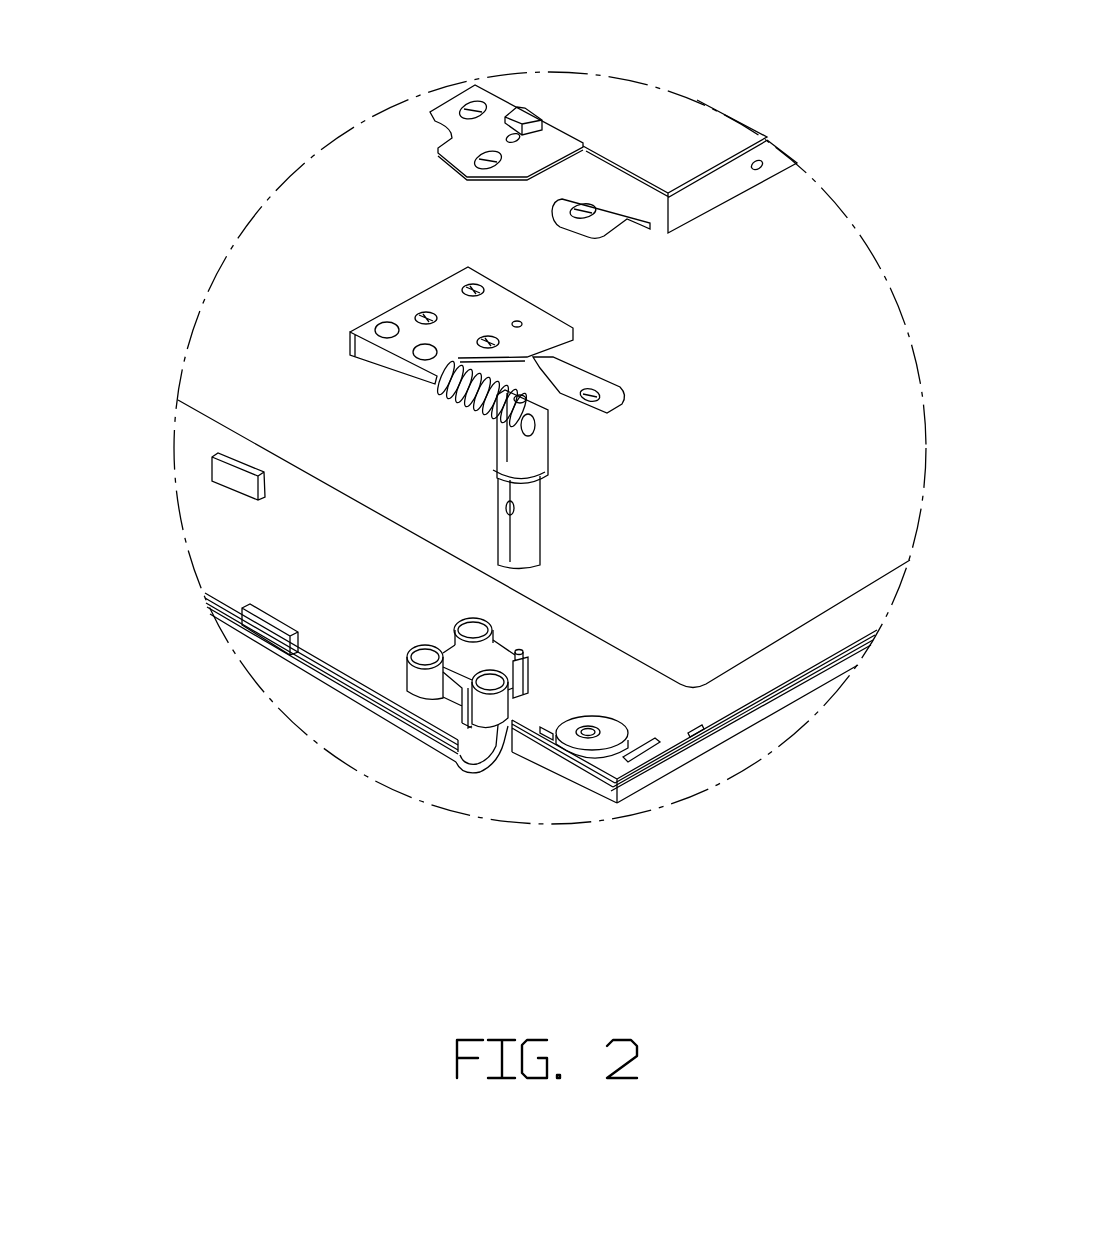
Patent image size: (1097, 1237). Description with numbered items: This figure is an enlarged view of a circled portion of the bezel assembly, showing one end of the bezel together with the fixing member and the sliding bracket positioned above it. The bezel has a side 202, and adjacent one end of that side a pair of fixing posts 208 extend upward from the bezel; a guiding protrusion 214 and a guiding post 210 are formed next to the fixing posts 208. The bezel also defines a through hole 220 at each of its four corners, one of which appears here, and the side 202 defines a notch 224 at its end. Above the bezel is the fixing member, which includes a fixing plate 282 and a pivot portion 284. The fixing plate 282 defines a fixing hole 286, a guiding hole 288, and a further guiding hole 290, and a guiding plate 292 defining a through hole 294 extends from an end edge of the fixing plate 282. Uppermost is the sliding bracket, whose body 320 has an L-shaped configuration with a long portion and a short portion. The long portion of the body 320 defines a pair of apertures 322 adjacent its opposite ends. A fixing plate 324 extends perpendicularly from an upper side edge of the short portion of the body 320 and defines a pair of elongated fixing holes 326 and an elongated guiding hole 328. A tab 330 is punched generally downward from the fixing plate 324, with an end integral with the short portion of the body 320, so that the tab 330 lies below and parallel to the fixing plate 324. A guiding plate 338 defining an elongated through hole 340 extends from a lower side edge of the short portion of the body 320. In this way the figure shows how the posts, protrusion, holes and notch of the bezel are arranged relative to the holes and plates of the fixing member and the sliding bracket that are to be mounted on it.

The side 202 is at (233, 547).
The fixing posts 208 is at (488, 683).
The guiding post 210 is at (408, 652).
The guiding protrusion 214 is at (522, 652).
The through hole 220 is at (590, 735).
The notch 224 is at (477, 743).
The fixing plate 282 is at (500, 307).
The pivot portion 284 is at (473, 388).
The fixing hole 286 is at (486, 338).
The guiding hole 288 is at (424, 316).
The guiding hole 290 is at (520, 322).
The guiding plate 292 is at (585, 382).
The through hole 294 is at (593, 397).
The body 320 is at (708, 193).
The apertures 322 is at (770, 160).
The fixing plate 324 is at (478, 100).
The elongated fixing holes 326 is at (447, 137).
The elongated guiding hole 328 is at (520, 142).
The tab 330 is at (540, 120).
The guiding plate 338 is at (605, 223).
The elongated through hole 340 is at (563, 202).